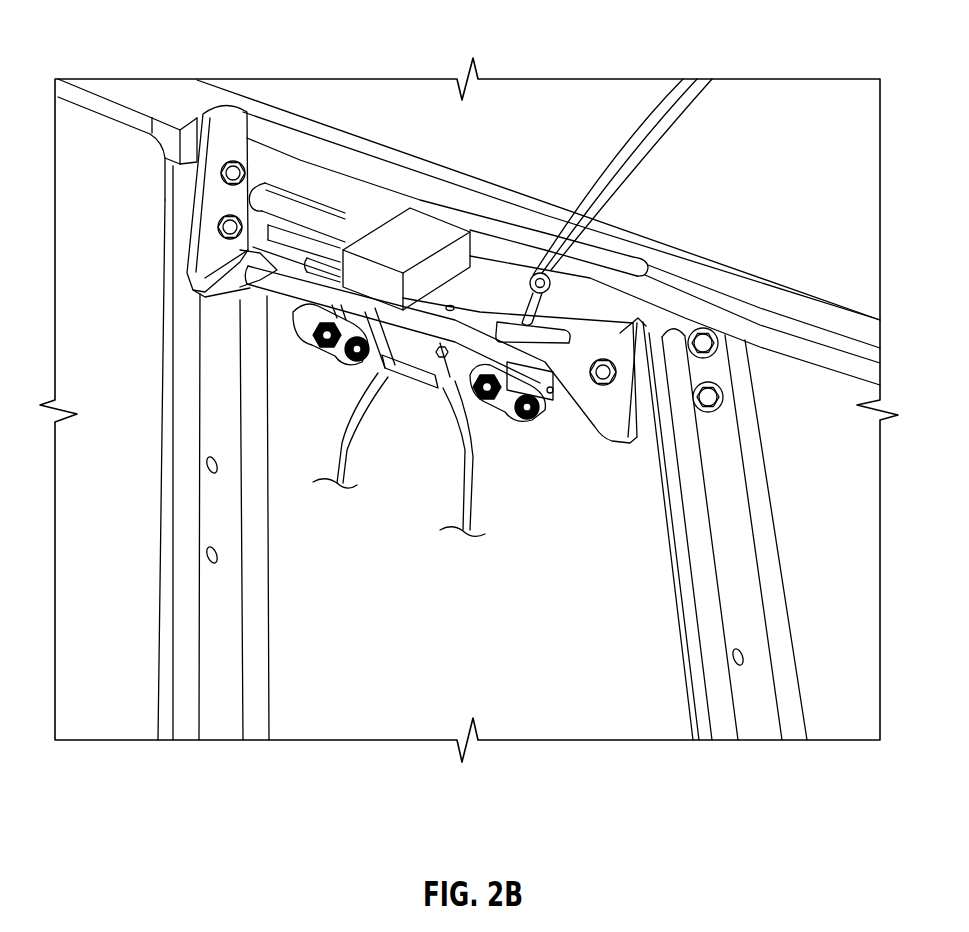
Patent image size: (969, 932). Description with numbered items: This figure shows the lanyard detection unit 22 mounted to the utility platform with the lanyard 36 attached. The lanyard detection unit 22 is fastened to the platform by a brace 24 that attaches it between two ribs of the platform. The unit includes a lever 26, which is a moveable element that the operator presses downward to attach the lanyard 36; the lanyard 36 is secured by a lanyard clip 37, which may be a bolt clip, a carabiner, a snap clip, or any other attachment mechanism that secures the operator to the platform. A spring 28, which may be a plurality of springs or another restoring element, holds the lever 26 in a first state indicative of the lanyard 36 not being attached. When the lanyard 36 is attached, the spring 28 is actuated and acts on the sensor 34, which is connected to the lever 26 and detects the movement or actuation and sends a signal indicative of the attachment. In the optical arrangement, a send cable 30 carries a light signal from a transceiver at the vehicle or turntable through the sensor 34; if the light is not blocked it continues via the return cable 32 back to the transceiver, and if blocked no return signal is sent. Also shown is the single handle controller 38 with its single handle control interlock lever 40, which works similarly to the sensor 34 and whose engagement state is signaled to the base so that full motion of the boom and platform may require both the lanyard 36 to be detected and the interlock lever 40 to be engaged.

The lanyard detection unit 22 is at (272, 156).
The brace 24 is at (192, 263).
The lever 26 is at (477, 315).
The spring 28 is at (325, 345).
The send cable 30 is at (340, 440).
The return cable 32 is at (467, 483).
The sensor 34 is at (418, 382).
The lanyard 36 is at (558, 242).
The lanyard clip 37 is at (544, 300).
The single handle controller 38 is at (344, 213).
The single handle control interlock lever 40 is at (268, 235).